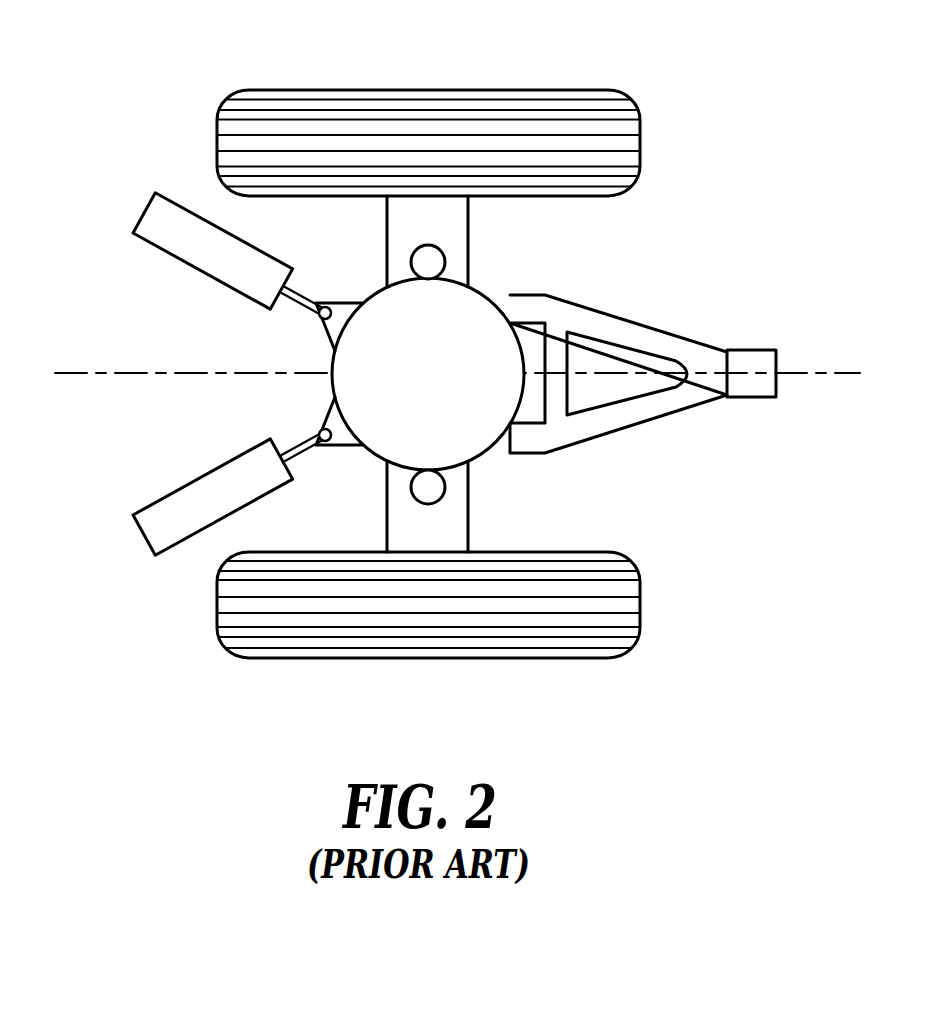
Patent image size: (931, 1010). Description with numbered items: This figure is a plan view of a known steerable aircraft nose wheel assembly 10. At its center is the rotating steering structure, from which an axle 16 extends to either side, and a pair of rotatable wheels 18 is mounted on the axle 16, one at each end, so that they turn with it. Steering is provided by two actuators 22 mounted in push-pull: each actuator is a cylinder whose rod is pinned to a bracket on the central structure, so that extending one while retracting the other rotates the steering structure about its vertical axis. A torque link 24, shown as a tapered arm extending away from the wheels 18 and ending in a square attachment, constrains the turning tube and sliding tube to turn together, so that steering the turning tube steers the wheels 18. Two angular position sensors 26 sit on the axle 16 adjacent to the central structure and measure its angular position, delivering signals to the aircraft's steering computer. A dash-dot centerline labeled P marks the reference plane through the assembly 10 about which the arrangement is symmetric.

The nose wheel assembly 10 is at (427, 375).
The axle 16 is at (425, 535).
The wheels 18 is at (421, 107).
The actuators 22 is at (150, 213).
The torque link 24 is at (623, 415).
The angular position sensors 26 is at (445, 261).
The center plane P is at (75, 373).